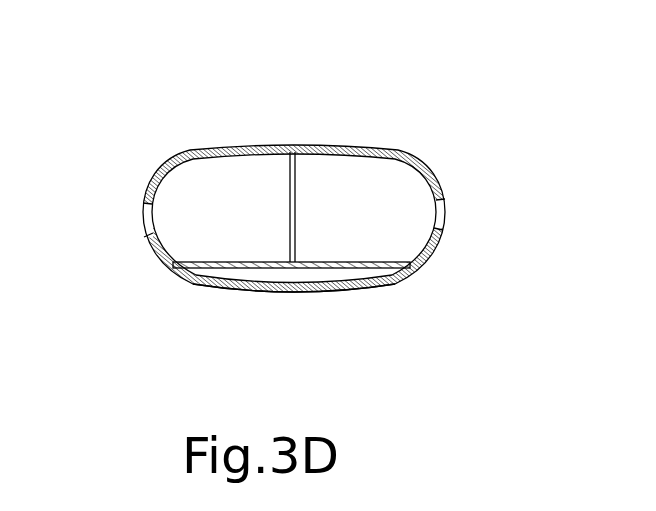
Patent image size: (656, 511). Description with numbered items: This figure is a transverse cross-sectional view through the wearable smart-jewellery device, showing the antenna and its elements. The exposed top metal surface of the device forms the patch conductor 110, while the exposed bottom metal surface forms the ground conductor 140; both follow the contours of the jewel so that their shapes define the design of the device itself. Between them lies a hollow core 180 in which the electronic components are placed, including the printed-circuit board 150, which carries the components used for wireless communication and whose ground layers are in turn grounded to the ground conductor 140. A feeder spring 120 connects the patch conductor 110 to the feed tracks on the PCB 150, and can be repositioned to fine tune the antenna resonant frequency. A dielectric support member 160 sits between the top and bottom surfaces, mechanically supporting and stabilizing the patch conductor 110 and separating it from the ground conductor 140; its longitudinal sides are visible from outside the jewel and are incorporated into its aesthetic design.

The patch conductor 110 is at (370, 147).
The feeder spring 120 is at (287, 165).
The ground conductor 140 is at (360, 293).
The printed-circuit board 150 is at (236, 268).
The dielectric support member 160 is at (147, 209).
The hollow core 180 is at (224, 192).